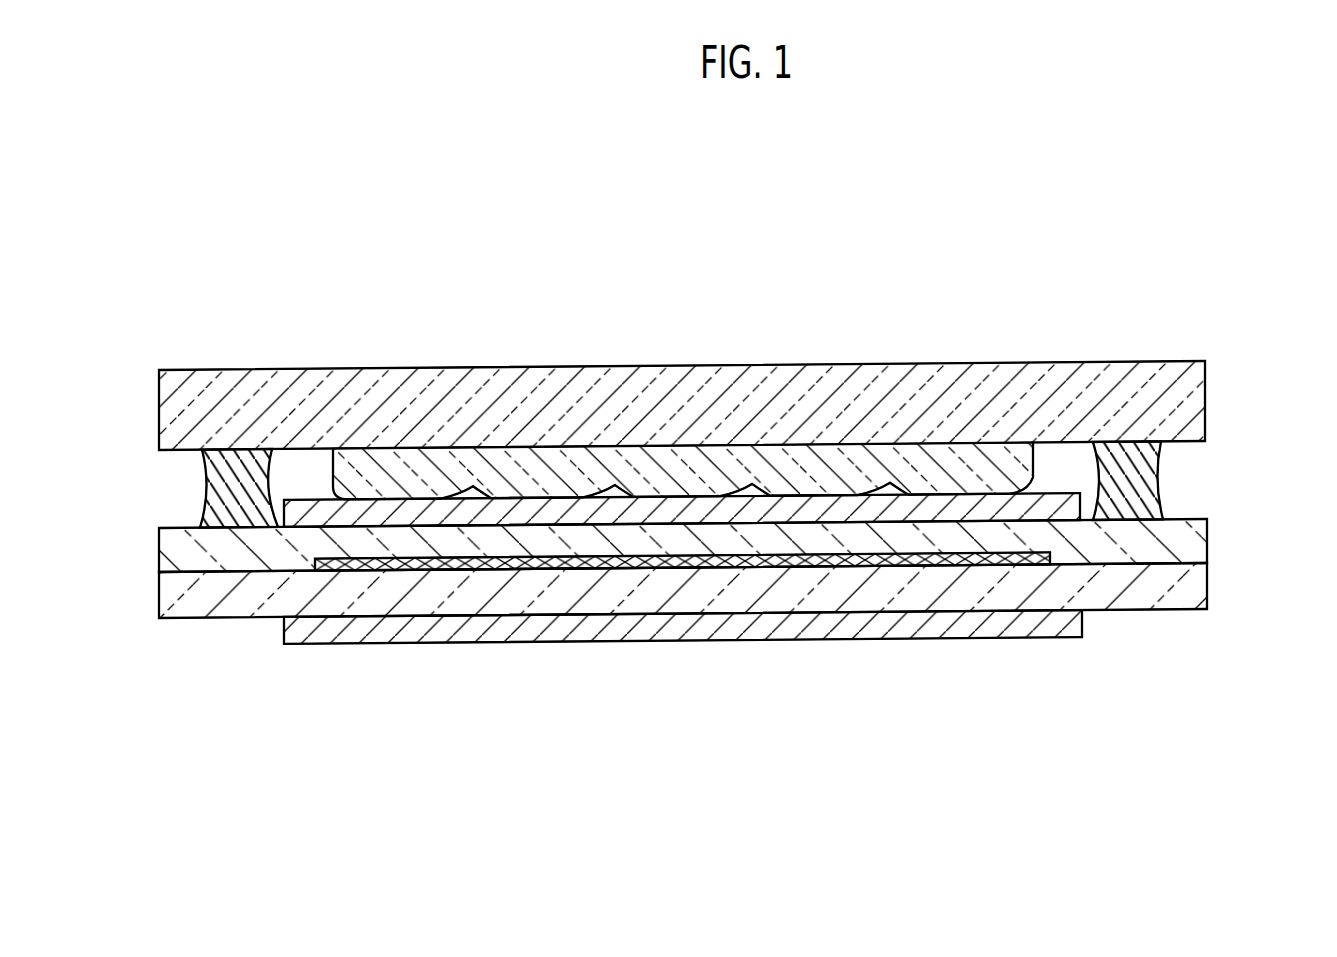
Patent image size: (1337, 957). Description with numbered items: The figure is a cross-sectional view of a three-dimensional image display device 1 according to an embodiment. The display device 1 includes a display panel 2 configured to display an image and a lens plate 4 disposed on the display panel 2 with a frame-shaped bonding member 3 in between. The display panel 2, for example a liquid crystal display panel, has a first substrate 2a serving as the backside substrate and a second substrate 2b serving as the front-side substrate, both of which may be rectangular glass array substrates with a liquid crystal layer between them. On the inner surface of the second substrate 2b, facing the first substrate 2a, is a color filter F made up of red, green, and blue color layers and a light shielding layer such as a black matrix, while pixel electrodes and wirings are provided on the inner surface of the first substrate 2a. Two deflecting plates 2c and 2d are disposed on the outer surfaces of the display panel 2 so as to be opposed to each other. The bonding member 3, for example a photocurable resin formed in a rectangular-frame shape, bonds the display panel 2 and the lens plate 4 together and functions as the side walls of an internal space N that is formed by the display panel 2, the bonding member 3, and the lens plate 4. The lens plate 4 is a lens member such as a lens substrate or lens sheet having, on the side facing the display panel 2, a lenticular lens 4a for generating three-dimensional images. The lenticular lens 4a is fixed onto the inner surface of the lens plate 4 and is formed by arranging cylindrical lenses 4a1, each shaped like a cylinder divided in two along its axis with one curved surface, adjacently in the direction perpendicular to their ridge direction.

The three-dimensional image display device 1 is at (1165, 237).
The display panel 2 is at (1212, 530).
The first substrate 2a is at (1193, 587).
The second substrate 2b is at (1195, 533).
The deflecting plate 2c is at (405, 520).
The deflecting plate 2d is at (538, 640).
The bonding member 3 is at (212, 503).
The lens plate 4 is at (1185, 390).
The lenticular lens 4a is at (1033, 480).
The cylindrical lens 4a1 is at (953, 480).
The color filter F is at (427, 565).
The internal space N is at (305, 478).